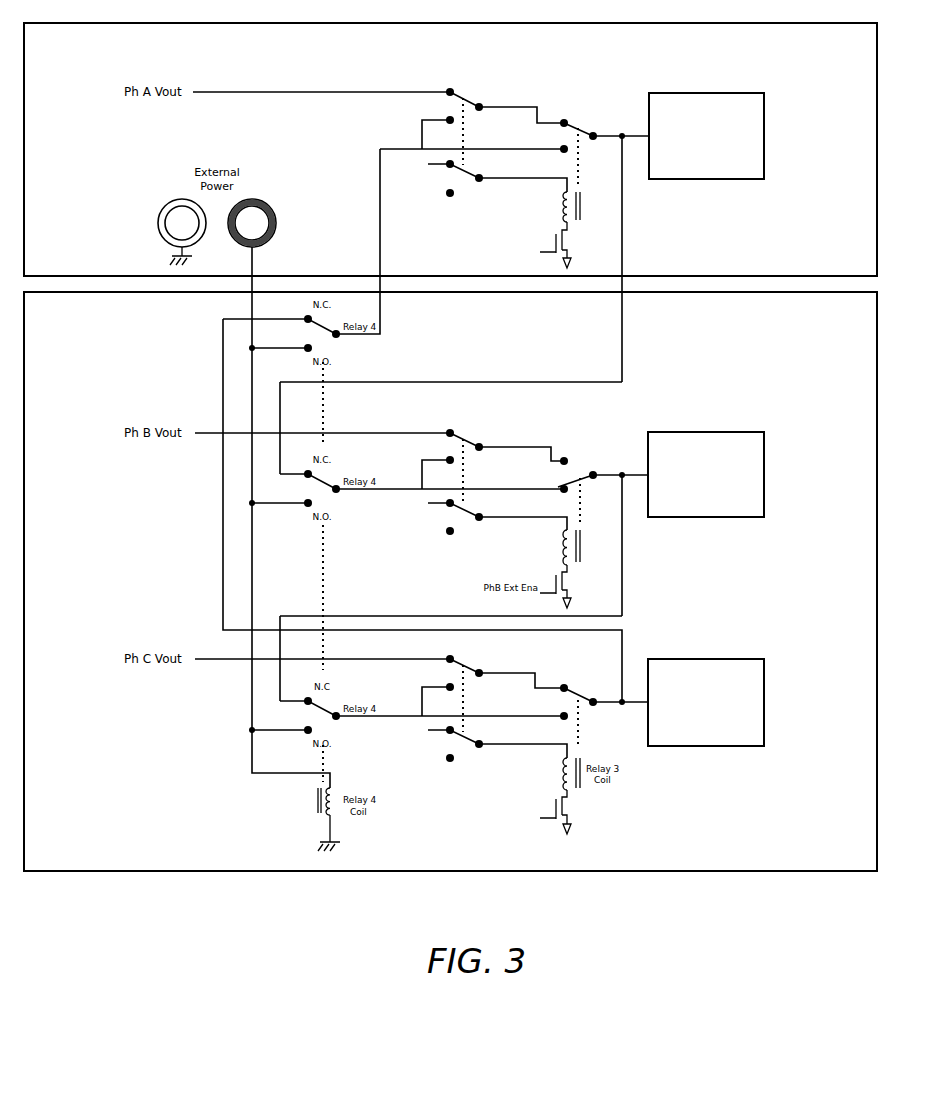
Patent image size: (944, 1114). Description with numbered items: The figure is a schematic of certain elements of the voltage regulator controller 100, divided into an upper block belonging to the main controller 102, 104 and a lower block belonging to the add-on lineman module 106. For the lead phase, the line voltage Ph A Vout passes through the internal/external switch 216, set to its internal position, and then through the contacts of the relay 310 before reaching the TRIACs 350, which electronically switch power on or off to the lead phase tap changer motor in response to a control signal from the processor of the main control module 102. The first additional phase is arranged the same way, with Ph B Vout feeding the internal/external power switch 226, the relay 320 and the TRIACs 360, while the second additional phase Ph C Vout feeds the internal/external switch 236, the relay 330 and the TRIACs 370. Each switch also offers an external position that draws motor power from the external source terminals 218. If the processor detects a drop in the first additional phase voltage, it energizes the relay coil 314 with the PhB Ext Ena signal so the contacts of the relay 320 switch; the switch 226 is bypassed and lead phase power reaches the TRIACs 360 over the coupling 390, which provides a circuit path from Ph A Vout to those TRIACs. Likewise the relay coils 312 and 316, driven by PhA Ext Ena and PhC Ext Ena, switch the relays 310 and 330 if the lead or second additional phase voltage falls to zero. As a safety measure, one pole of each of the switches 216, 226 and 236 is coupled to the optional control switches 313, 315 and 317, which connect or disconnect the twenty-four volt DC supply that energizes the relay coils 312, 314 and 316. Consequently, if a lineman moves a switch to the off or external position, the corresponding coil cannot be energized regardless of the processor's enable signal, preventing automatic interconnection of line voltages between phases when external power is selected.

The main controller 102 is at (833, 62).
The power module 104 is at (450, 149).
The add-on lineman module 106 is at (798, 328).
The internal/external switch 216 is at (462, 97).
The external source terminals 218 is at (272, 209).
The relay 310 is at (585, 133).
The relay coil 312 is at (578, 222).
The control switch 313 is at (438, 184).
The voltage regulator controller 100 is at (562, 206).
The TRIACs 350 is at (755, 155).
The coupling 390 is at (397, 382).
The internal/external power switch 226 is at (462, 437).
The relay 320 is at (588, 471).
The relay coil 314 is at (562, 546).
The control switch 315 is at (438, 519).
The TRIACs 360 is at (755, 503).
The internal/external switch 236 is at (462, 664).
The relay 330 is at (583, 697).
The relay coil 316 is at (578, 789).
The control switch 317 is at (438, 746).
The TRIACs 370 is at (765, 725).